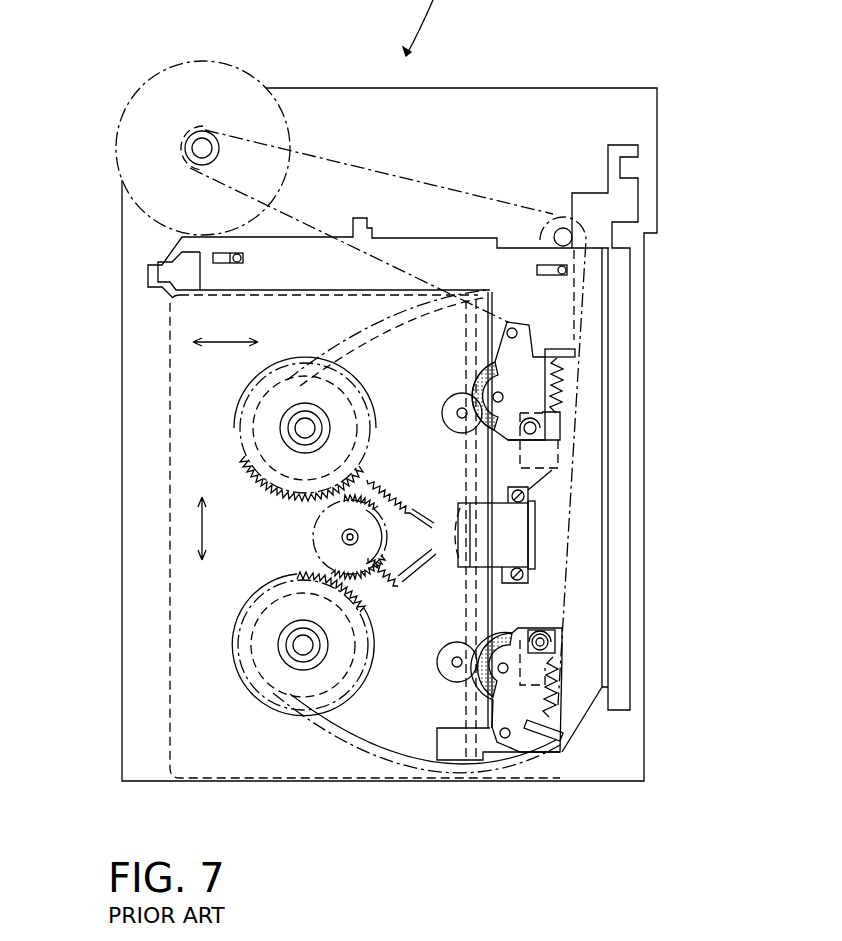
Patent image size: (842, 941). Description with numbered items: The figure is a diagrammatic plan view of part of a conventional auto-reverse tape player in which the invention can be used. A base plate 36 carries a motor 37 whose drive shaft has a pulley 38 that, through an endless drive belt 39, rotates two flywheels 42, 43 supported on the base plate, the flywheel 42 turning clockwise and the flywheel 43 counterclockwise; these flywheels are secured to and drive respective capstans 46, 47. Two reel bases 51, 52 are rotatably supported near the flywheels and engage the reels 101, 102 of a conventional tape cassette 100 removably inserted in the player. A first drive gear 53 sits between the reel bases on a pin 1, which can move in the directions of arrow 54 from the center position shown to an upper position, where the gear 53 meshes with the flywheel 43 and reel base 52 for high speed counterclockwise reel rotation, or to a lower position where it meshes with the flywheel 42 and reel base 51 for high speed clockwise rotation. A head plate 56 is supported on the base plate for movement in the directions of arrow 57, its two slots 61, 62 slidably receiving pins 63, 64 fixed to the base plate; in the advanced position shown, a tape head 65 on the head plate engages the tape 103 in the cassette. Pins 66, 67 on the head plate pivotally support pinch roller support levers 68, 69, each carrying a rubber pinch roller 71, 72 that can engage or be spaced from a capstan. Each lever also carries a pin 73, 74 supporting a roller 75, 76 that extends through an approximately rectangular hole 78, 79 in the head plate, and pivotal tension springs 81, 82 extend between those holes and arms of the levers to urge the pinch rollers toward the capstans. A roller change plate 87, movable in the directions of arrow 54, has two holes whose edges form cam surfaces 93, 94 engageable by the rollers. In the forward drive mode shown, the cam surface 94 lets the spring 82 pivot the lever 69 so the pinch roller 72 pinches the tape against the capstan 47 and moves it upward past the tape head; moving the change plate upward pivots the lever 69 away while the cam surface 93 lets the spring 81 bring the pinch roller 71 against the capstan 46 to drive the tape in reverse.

The pin 1 is at (348, 535).
The base plate 36 is at (527, 88).
The motor 37 is at (230, 65).
The pulley 38 is at (220, 152).
The endless drive belt 39 is at (377, 165).
The flywheel 42 is at (400, 753).
The flywheel 43 is at (403, 317).
The capstan 46 is at (452, 662).
The capstan 47 is at (452, 413).
The reel base 51 is at (237, 650).
The reel base 52 is at (240, 433).
The first drive gear 53 is at (326, 554).
The arrow 54 is at (205, 530).
The head plate 56 is at (590, 535).
The arrow 57 is at (222, 345).
The slot 61 is at (222, 265).
The slot 62 is at (535, 268).
The pin 63 is at (240, 264).
The pin 64 is at (558, 265).
The tape head 65 is at (512, 537).
The pin 66 is at (505, 740).
The pin 67 is at (512, 327).
The pinch roller support lever 68 is at (505, 703).
The pinch roller support lever 69 is at (527, 352).
The rubber pinch roller 71 is at (480, 642).
The rubber pinch roller 72 is at (470, 390).
The pin 73 is at (541, 630).
The pin 74 is at (523, 429).
The roller 75 is at (540, 627).
The roller 76 is at (530, 456).
The rectangular hole 78 is at (562, 642).
The rectangular hole 79 is at (562, 427).
The tension spring 81 is at (560, 720).
The tension spring 82 is at (560, 375).
The roller change plate 87 is at (620, 333).
The cam surface 93 is at (487, 693).
The cam surface 94 is at (520, 470).
The tape cassette 100 is at (170, 707).
The reel 101 is at (273, 692).
The reel 102 is at (240, 454).
The tape 103 is at (462, 597).